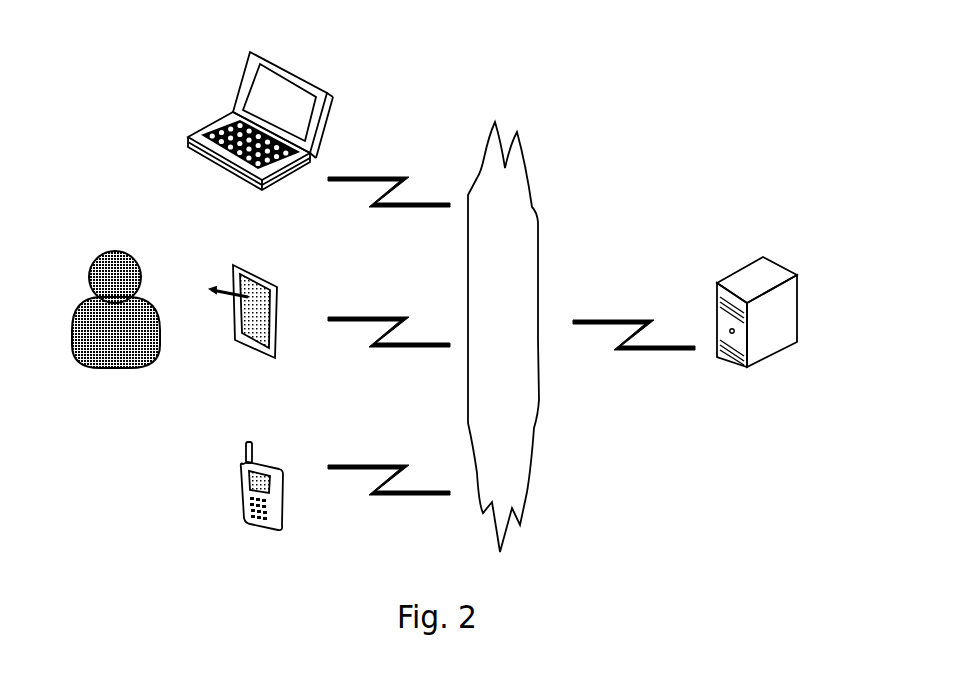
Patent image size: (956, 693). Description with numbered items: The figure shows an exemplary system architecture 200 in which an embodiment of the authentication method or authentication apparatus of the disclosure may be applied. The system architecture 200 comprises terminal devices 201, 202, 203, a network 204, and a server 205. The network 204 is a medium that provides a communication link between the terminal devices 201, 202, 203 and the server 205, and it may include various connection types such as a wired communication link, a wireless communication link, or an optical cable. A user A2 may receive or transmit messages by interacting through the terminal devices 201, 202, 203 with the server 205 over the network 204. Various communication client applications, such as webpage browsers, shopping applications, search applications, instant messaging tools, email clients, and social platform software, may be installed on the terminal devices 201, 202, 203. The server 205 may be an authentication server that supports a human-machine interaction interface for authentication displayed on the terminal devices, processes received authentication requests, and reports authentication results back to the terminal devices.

The system architecture 200 is at (680, 44).
The terminal device 201 is at (262, 504).
The terminal device 202 is at (243, 328).
The terminal device 203 is at (260, 136).
The network 204 is at (503, 337).
The server 205 is at (757, 332).
The user A2 is at (116, 324).